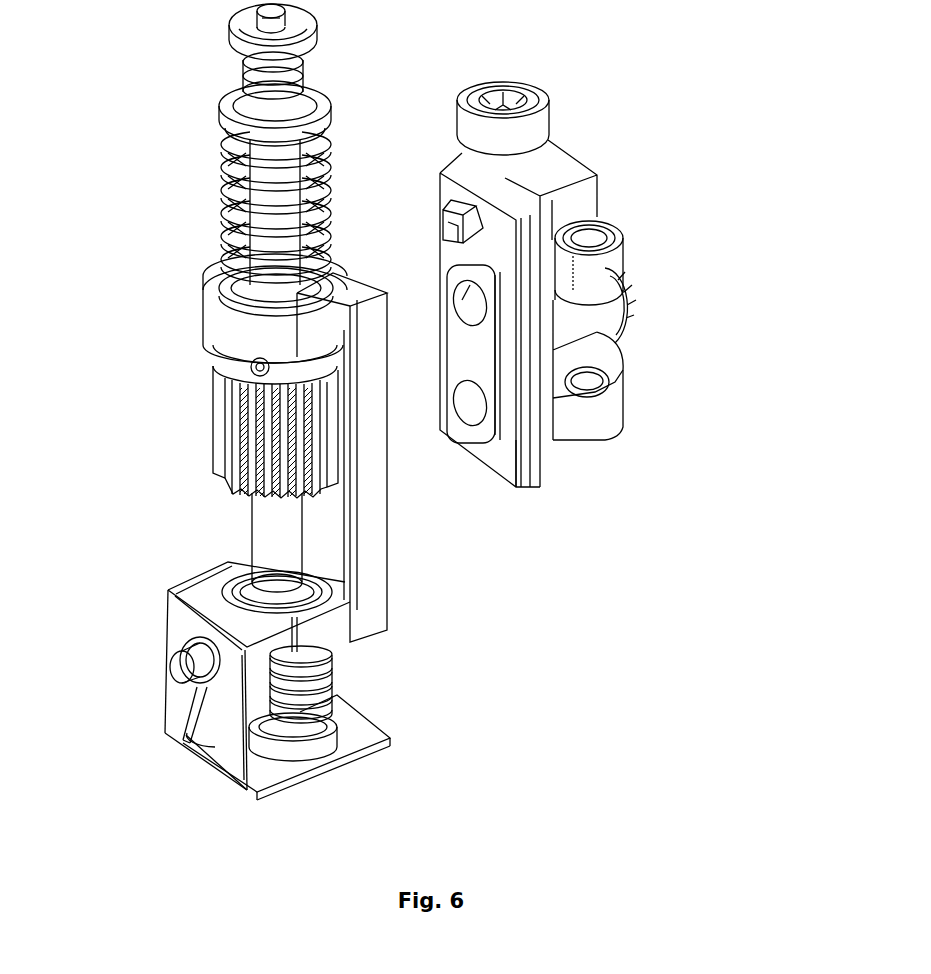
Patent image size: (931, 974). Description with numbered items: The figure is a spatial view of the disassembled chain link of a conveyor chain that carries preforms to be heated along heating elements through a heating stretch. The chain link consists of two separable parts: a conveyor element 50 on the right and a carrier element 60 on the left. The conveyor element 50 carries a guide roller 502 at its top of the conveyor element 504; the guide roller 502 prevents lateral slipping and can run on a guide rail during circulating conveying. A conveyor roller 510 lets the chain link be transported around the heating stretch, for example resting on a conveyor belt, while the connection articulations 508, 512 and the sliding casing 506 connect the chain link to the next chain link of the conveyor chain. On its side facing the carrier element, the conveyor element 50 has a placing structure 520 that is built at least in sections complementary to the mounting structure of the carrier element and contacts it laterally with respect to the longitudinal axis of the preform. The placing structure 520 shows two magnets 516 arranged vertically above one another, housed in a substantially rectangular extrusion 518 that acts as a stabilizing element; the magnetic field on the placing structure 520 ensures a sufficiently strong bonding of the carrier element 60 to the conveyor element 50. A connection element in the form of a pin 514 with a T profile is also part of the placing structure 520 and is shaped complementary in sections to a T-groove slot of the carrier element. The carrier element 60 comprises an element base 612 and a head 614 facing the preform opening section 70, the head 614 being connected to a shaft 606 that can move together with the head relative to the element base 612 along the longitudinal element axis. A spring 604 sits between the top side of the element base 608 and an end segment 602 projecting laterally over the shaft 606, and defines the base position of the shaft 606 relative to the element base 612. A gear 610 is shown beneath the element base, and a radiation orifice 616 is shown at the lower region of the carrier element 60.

The conveyor element 50 is at (692, 197).
The carrier element 60 is at (176, 322).
The preform opening section 70 is at (390, 750).
The guide roller 502 is at (550, 130).
The top of the conveyor element 504 is at (563, 167).
The sliding casing 506 is at (590, 238).
The connection articulation 508 is at (597, 280).
The conveyor roller 510 is at (628, 315).
The connection articulation 512 is at (600, 417).
The pin with T profile 514 is at (430, 170).
The magnet 516 is at (432, 240).
The extrusion in the placing structure 518 is at (473, 350).
The placing structure 520 is at (510, 467).
The end segment 602 is at (232, 123).
The spring 604 is at (230, 190).
The shaft 606 is at (230, 213).
The top side of the element base 608 is at (217, 280).
The gear 610 is at (207, 450).
The element base 612 is at (367, 598).
The head 614 is at (335, 668).
The radiation orifice 616 is at (350, 731).